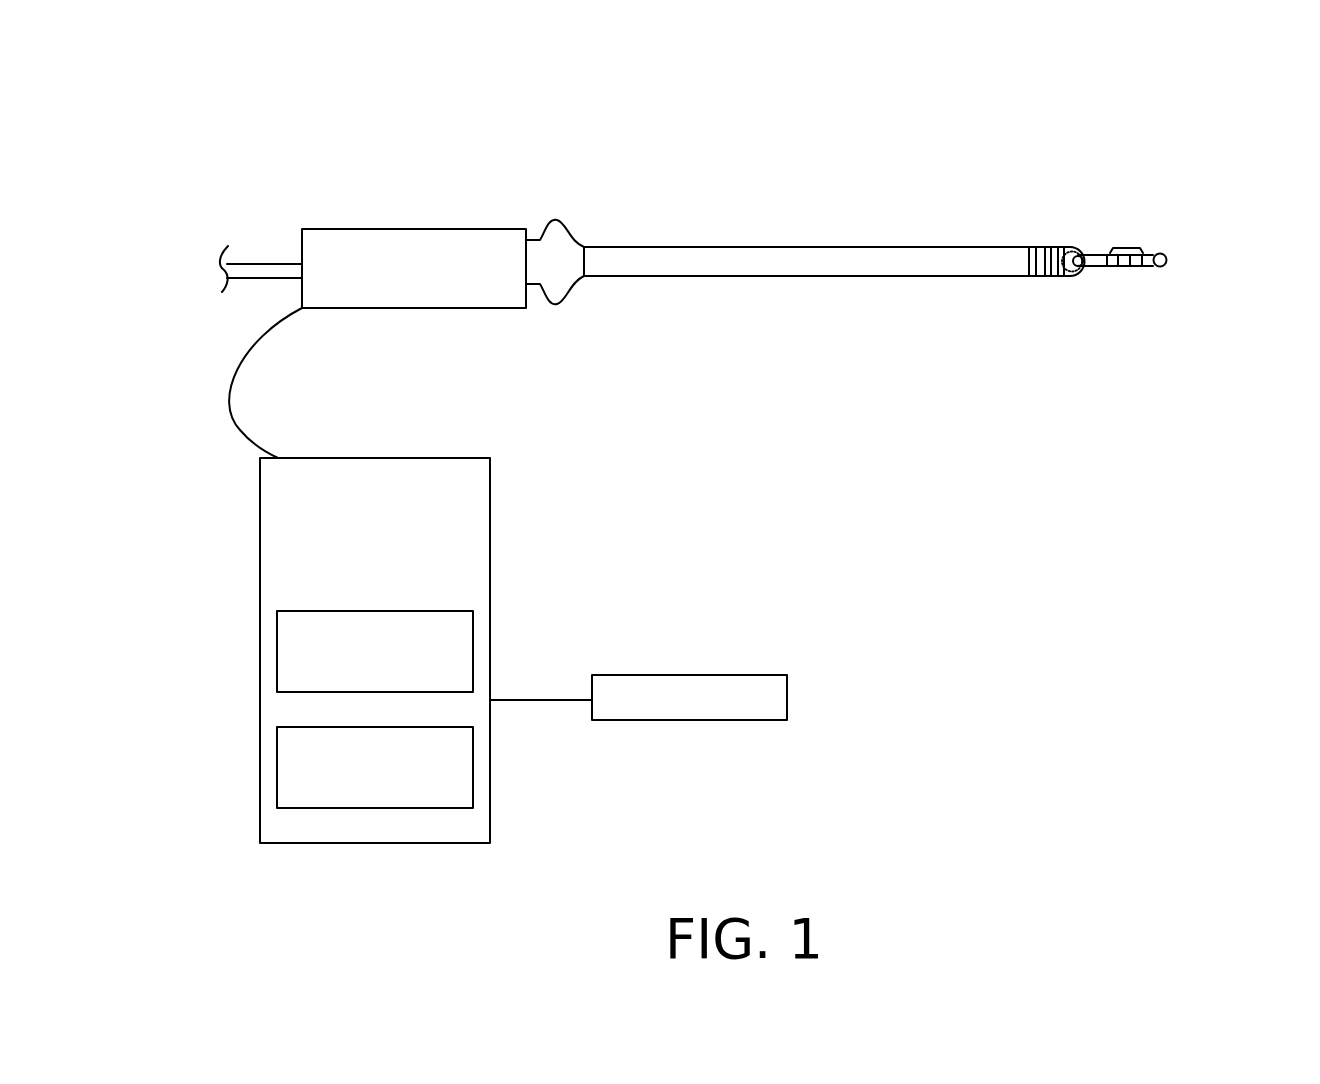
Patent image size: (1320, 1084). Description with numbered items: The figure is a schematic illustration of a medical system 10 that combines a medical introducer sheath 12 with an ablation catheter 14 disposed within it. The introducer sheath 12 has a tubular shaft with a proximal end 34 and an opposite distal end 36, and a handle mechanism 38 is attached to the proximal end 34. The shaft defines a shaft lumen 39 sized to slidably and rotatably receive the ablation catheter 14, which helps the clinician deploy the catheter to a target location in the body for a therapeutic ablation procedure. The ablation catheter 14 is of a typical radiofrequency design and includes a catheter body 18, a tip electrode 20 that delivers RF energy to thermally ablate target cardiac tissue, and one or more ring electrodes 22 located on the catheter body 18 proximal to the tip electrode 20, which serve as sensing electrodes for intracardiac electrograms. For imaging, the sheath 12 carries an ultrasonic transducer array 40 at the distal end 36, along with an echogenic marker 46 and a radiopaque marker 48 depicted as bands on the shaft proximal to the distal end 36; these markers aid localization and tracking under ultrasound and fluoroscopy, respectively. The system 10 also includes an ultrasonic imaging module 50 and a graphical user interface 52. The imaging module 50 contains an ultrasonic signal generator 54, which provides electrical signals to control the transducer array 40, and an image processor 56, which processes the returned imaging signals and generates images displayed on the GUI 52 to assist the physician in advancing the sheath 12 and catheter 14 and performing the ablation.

The medical system 10 is at (615, 106).
The medical introducer sheath 12 is at (852, 241).
The ablation catheter 14 is at (1119, 281).
The catheter body 18 is at (1095, 255).
The tip electrode 20 is at (1166, 256).
The ring electrodes 22 is at (1128, 248).
The proximal end 34 is at (600, 247).
The distal end 36 is at (1058, 276).
The handle mechanism 38 is at (447, 229).
The shaft lumen 39 is at (1090, 276).
The ultrasonic transducer array 40 is at (1082, 250).
The echogenic marker 46 is at (1042, 247).
The radiopaque marker 48 is at (1035, 247).
The ultrasonic imaging module 50 is at (260, 540).
The graphical user interface 52 is at (698, 675).
The ultrasonic signal generator 54 is at (277, 650).
The image processor 56 is at (277, 777).